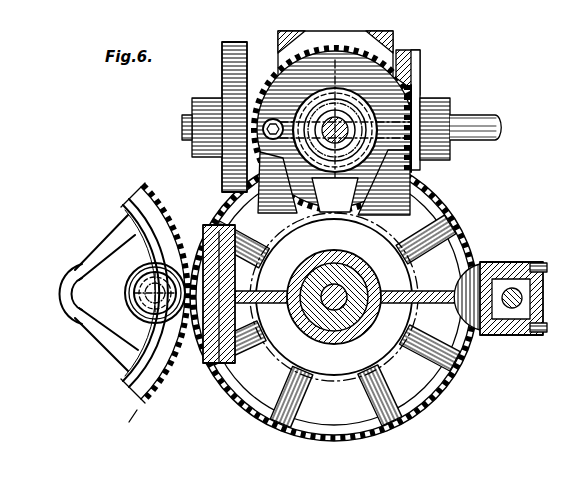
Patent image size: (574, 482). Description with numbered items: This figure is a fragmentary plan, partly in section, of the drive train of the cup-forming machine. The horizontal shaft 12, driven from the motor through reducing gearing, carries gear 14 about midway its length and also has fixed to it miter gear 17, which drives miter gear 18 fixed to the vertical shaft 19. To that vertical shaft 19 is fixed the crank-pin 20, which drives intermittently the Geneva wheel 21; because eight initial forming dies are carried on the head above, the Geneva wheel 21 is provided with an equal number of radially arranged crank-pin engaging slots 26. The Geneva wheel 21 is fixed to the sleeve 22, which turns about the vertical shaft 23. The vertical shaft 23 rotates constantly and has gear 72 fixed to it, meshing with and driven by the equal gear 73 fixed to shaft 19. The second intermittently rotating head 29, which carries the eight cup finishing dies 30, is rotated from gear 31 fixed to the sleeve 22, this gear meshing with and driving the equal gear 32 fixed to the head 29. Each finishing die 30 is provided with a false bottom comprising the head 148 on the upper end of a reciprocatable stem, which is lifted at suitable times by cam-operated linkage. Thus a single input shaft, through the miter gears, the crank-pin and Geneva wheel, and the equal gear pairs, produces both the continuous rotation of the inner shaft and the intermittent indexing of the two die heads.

The horizontal shaft 12 is at (492, 118).
The gear 14 is at (226, 172).
The miter gear 17 is at (422, 76).
The miter gear 18 is at (396, 60).
The vertical shaft 19 is at (354, 137).
The crank-pin 20 is at (272, 117).
The Geneva wheel 21 is at (452, 228).
The sleeve 22 is at (334, 306).
The vertical shaft 23 is at (360, 318).
The crank-pin engaging slots 26 is at (474, 247).
The second intermittently rotating head 29 is at (74, 298).
The cup finishing die 30 is at (133, 313).
The gear 31 is at (440, 404).
The gear 32 is at (135, 416).
The gear 72 is at (340, 218).
The gear 73 is at (296, 50).
The head 148 is at (140, 285).